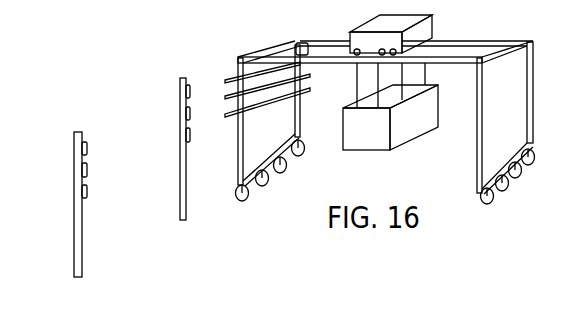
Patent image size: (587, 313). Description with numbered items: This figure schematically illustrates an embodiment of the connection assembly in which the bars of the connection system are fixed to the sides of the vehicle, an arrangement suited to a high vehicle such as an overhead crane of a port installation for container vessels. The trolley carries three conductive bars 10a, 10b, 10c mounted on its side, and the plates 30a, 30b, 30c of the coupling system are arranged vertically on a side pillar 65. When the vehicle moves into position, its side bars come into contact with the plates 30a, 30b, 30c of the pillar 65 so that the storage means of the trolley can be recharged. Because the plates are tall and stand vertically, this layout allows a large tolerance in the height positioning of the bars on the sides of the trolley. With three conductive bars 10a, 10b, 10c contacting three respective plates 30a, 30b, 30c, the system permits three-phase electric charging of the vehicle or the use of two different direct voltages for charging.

The conductive bar 10a is at (306, 44).
The conductive bar 10b is at (306, 66).
The conductive bar 10c is at (308, 82).
The plate 30a is at (188, 82).
The plate 30b is at (190, 120).
The plate 30c is at (184, 141).
The side pillar 65 is at (180, 107).